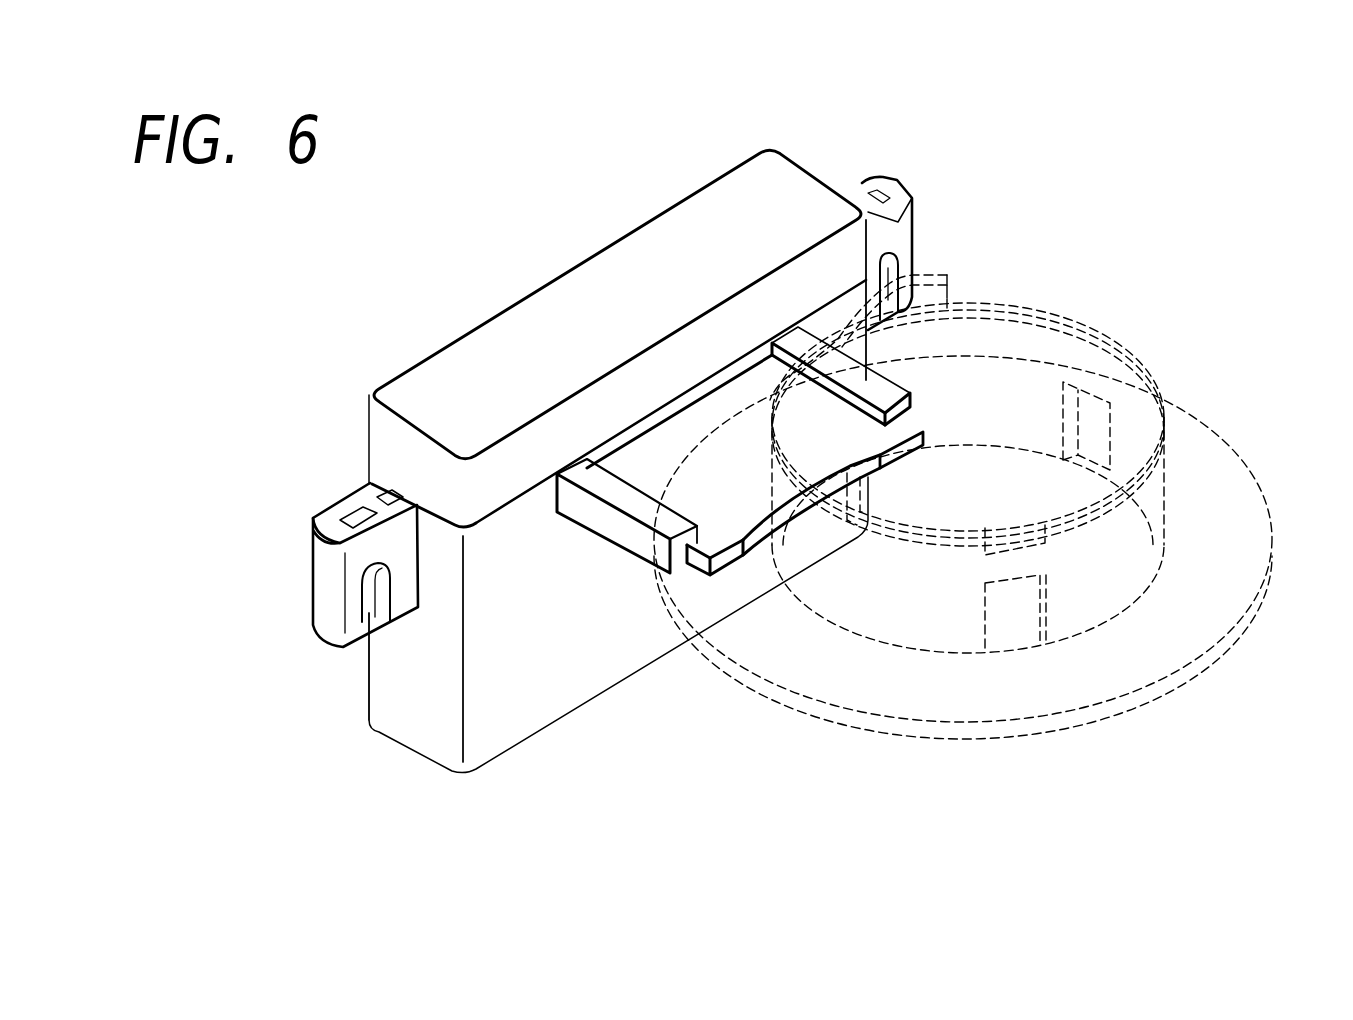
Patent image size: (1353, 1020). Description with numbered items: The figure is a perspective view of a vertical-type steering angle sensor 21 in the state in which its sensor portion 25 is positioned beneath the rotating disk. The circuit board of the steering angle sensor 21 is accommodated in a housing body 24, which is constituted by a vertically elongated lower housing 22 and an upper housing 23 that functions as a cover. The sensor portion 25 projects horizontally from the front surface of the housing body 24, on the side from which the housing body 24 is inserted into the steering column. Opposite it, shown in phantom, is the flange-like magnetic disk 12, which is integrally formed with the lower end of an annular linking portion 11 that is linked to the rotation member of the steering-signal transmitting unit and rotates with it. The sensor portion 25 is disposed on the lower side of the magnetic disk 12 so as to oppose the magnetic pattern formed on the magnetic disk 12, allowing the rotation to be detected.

The annular linking portion 11 is at (907, 618).
The magnetic disk 12 is at (1217, 477).
The steering angle sensor 21 is at (563, 232).
The lower housing 22 is at (403, 708).
The upper housing 23 is at (407, 463).
The housing body 24 is at (491, 500).
The sensor portion 25 is at (708, 513).